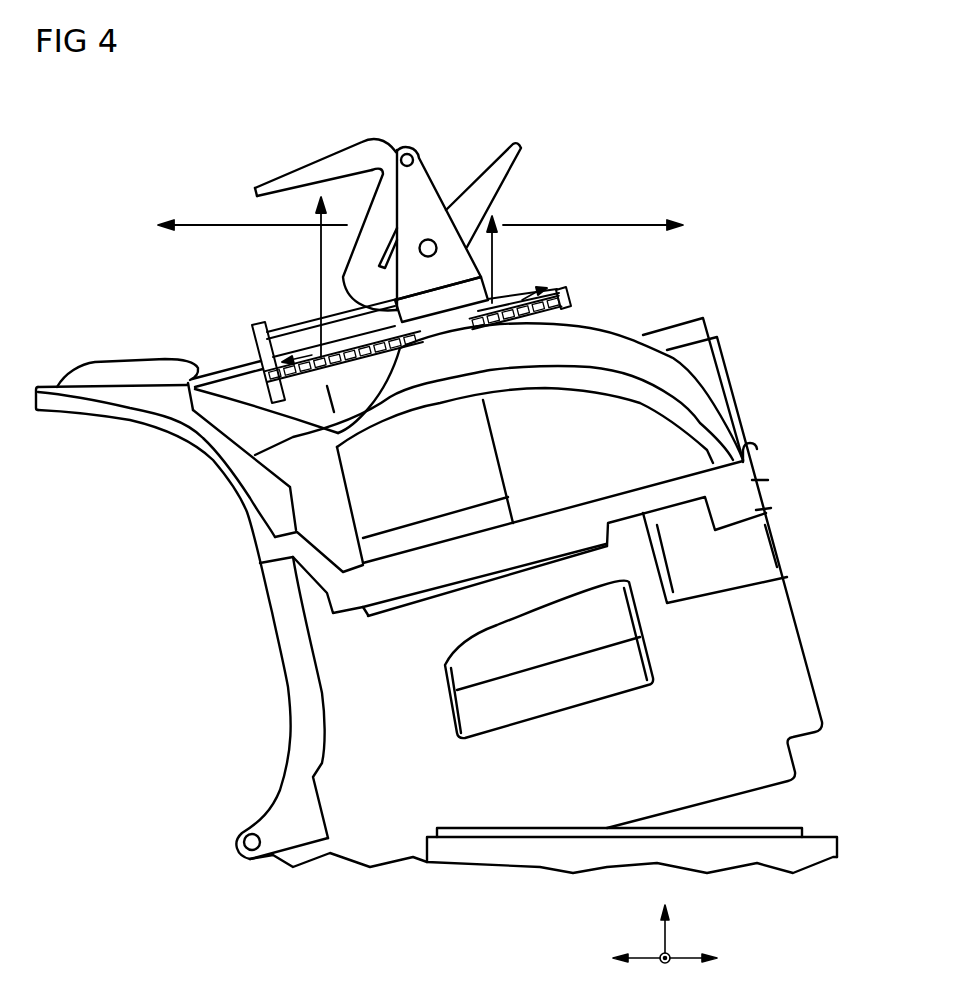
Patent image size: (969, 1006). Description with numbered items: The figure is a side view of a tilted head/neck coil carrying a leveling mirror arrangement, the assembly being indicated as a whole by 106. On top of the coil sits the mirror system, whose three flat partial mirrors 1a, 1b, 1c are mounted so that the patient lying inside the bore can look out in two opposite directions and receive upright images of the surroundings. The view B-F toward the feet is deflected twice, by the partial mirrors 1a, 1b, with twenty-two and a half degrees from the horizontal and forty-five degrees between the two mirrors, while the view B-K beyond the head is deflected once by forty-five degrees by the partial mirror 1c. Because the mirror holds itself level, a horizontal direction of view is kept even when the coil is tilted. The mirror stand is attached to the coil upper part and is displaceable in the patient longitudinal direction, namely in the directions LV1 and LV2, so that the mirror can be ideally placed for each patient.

The cabinet / clamping device assembly 106 is at (150, 147).
The partial mirror 1a is at (280, 201).
The partial mirror 1b is at (370, 174).
The partial mirror 1c is at (524, 176).
The view beyond the head B-K is at (488, 247).
The view in the direction of the feet B-F is at (321, 256).
The displacement direction LV1 is at (308, 348).
The displacement direction LV2 is at (522, 296).